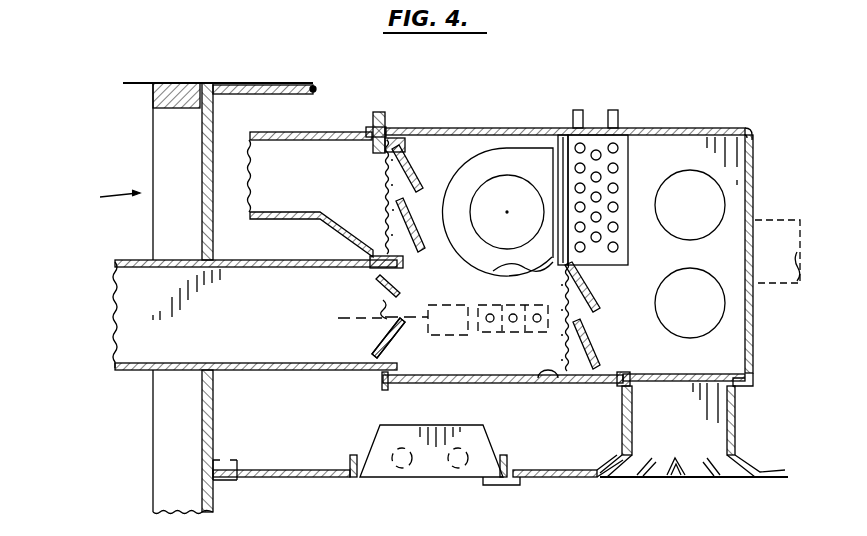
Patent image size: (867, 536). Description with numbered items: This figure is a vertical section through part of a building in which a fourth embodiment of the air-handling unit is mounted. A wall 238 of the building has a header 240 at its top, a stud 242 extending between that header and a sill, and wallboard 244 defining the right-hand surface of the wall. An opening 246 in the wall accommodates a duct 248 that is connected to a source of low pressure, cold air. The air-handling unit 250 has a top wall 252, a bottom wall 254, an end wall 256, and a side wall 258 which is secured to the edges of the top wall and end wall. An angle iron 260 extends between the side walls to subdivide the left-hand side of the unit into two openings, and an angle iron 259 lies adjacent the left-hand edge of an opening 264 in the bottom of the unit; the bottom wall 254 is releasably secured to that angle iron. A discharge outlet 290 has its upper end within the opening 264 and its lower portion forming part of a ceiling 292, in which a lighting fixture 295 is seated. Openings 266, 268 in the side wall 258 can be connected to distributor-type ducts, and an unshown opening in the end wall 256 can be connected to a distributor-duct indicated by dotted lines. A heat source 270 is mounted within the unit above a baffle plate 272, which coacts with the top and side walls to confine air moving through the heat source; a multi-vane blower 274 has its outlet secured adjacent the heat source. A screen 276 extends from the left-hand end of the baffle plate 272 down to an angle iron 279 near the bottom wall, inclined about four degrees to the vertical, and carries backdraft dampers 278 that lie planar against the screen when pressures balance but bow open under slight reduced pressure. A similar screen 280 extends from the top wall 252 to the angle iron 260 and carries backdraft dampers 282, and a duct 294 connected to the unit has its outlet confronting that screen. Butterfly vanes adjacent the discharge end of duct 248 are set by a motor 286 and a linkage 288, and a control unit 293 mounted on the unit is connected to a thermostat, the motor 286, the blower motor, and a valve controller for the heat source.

The wall 238 is at (109, 186).
The header 240 is at (192, 92).
The stud 242 is at (162, 456).
The wallboard 244 is at (214, 124).
The opening 246 is at (212, 362).
The duct 248 is at (260, 371).
The air-handling unit 250 is at (727, 117).
The top wall 252 is at (516, 128).
The bottom wall 254 is at (487, 384).
The end wall 256 is at (755, 200).
The side wall 258 is at (738, 342).
The angle iron 259 is at (620, 394).
The angle iron 260 is at (403, 263).
The opening 264 is at (660, 374).
The opening 266 is at (686, 176).
The opening 268 is at (686, 274).
The heat source 270 is at (622, 152).
The baffle plate 272 is at (506, 278).
The multi-vane blower 274 is at (484, 150).
The screen 276 is at (565, 300).
The backdraft dampers 278 is at (597, 300).
The angle iron 279 is at (545, 386).
The screen 280 is at (383, 178).
The backdraft dampers 282 is at (404, 160).
The motor 286 is at (432, 337).
The linkage 288 is at (346, 312).
The discharge outlet 290 is at (651, 478).
The ceiling 292 is at (300, 478).
The control unit 293 is at (501, 334).
The duct 294 is at (328, 132).
The lighting fixture 295 is at (428, 478).